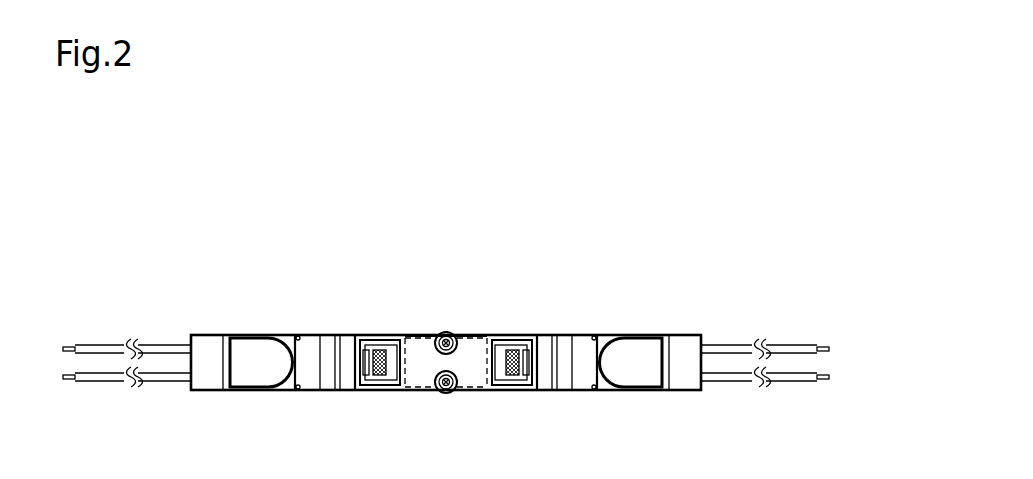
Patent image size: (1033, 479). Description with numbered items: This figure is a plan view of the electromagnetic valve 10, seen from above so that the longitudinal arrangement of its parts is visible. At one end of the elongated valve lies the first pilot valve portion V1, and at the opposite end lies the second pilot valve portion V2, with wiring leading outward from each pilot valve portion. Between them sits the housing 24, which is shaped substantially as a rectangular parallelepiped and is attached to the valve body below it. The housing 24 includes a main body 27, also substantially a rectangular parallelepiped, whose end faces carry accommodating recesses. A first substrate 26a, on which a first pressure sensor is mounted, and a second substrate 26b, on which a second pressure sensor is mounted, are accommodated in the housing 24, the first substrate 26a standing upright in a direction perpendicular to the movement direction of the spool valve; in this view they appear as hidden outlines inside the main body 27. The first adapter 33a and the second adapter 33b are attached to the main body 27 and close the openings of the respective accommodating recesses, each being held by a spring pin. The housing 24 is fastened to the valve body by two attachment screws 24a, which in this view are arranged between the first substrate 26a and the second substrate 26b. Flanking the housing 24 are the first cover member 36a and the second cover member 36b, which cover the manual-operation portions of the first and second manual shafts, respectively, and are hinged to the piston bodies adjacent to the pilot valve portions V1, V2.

The electromagnetic valve 10 is at (185, 197).
The housing 24 is at (478, 335).
The attachment screws 24a is at (446, 334).
The first substrate 26a is at (487, 336).
The second substrate 26b is at (403, 336).
The main body 27 is at (418, 335).
The first adapter 33a is at (507, 391).
The second adapter 33b is at (375, 391).
The first cover member 36a is at (567, 345).
The second cover member 36b is at (327, 345).
The first pilot valve portion V1 is at (649, 350).
The second pilot valve portion V2 is at (248, 350).